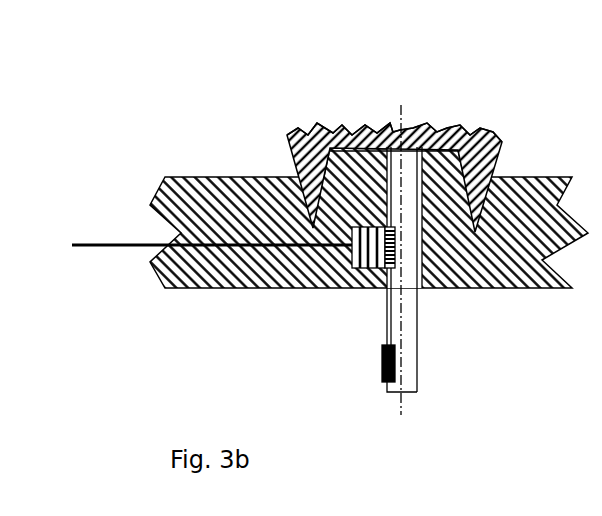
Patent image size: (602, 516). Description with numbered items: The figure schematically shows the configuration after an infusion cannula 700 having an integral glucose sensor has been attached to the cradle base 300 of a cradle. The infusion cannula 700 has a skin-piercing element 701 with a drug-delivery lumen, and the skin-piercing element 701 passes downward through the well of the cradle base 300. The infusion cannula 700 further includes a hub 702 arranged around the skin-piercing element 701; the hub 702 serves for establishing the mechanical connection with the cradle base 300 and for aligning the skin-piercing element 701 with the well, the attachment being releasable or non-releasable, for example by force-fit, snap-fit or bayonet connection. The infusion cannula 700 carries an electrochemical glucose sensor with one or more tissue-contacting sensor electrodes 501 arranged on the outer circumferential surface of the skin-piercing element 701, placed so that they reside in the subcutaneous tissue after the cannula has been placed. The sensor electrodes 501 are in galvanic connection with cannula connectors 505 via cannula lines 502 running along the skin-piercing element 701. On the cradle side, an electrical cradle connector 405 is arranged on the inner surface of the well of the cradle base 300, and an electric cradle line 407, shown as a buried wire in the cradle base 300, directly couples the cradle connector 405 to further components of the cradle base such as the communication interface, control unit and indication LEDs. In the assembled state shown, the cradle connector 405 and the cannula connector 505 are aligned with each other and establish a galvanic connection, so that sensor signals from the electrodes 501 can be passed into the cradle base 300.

The cradle base 300 is at (210, 163).
The infusion cannula 700 is at (377, 147).
The hub 702 is at (468, 125).
The electric cradle line 407 is at (130, 253).
The electrical cradle connector 405 is at (355, 270).
The cannula connector 505 is at (402, 263).
The cannula line 502 is at (397, 317).
The tissue-contacting sensor electrode 501 is at (378, 358).
The skin-piercing element 701 is at (407, 380).